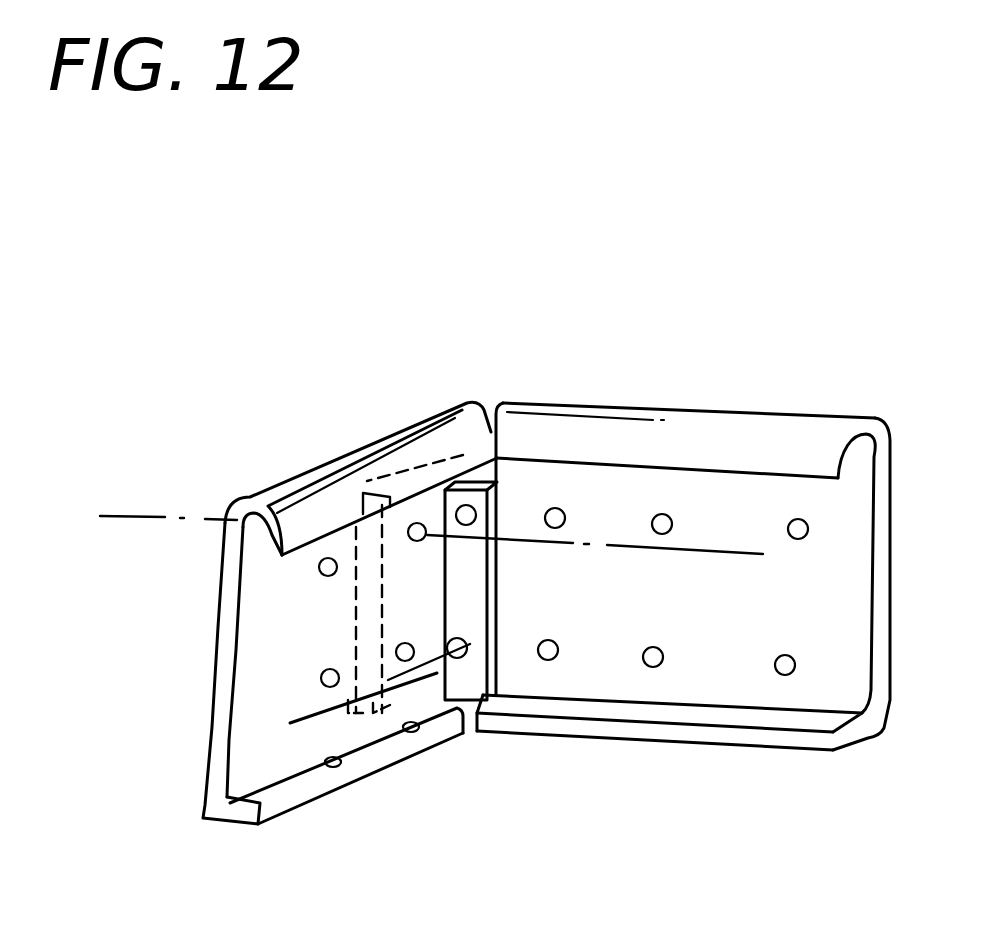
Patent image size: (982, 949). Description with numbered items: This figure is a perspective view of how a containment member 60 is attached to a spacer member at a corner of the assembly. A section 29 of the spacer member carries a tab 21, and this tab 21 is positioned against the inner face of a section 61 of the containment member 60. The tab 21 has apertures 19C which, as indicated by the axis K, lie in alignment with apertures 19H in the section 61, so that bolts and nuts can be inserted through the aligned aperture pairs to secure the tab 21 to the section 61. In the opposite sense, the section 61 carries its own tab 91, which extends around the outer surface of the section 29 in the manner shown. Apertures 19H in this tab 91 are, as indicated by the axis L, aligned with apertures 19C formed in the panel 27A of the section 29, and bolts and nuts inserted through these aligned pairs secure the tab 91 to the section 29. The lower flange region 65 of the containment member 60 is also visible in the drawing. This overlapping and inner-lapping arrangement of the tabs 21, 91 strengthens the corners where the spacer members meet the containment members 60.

The panel 27A is at (247, 735).
The section 29 is at (272, 470).
The tab 91 is at (452, 455).
The tab 21 is at (490, 613).
The apertures 19C is at (477, 517).
The axis L is at (118, 514).
The containment member 60 is at (844, 384).
The section 61 is at (750, 408).
The bottom flange 65 is at (655, 730).
The apertures 19H is at (785, 676).
The axis K is at (290, 723).